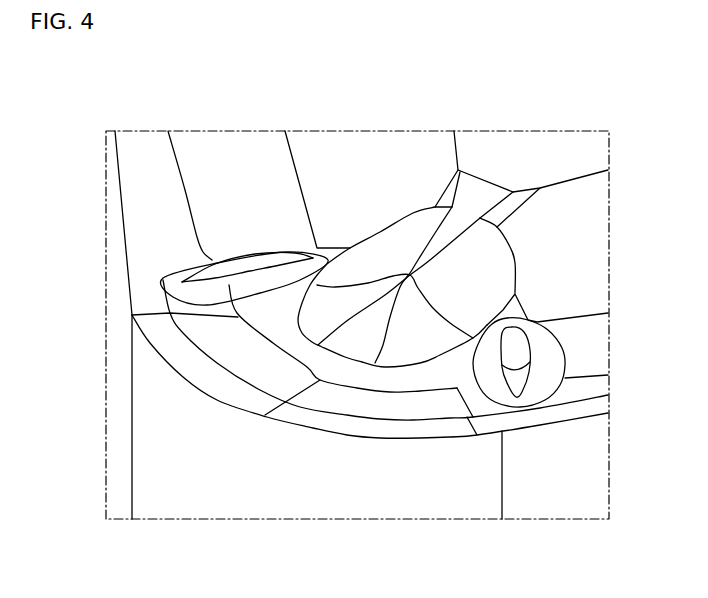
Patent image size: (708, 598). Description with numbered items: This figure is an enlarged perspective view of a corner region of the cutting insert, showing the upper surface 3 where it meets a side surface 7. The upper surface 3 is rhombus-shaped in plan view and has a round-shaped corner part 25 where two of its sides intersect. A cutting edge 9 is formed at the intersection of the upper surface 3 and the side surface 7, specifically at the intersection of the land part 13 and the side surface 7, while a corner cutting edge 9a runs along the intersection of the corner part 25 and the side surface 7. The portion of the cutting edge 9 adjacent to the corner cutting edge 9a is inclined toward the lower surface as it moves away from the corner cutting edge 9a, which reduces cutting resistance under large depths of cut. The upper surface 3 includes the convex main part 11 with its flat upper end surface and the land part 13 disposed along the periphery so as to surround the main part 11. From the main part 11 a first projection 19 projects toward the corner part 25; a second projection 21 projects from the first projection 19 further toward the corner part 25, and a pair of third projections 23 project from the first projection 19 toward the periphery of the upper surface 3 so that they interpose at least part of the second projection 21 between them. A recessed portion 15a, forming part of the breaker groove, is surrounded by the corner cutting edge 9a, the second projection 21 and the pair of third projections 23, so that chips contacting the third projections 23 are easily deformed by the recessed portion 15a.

The upper surface 3 is at (463, 195).
The side surface 7 is at (566, 497).
The cutting edge 9 is at (123, 281).
The corner cutting edge 9a is at (278, 422).
The main part 11 is at (517, 150).
The land part 13 is at (422, 428).
The recessed portion 15a is at (278, 338).
The first projection 19 is at (450, 235).
The second projection 21 is at (365, 338).
The third projection 23 is at (253, 267).
The corner part 25 is at (263, 417).